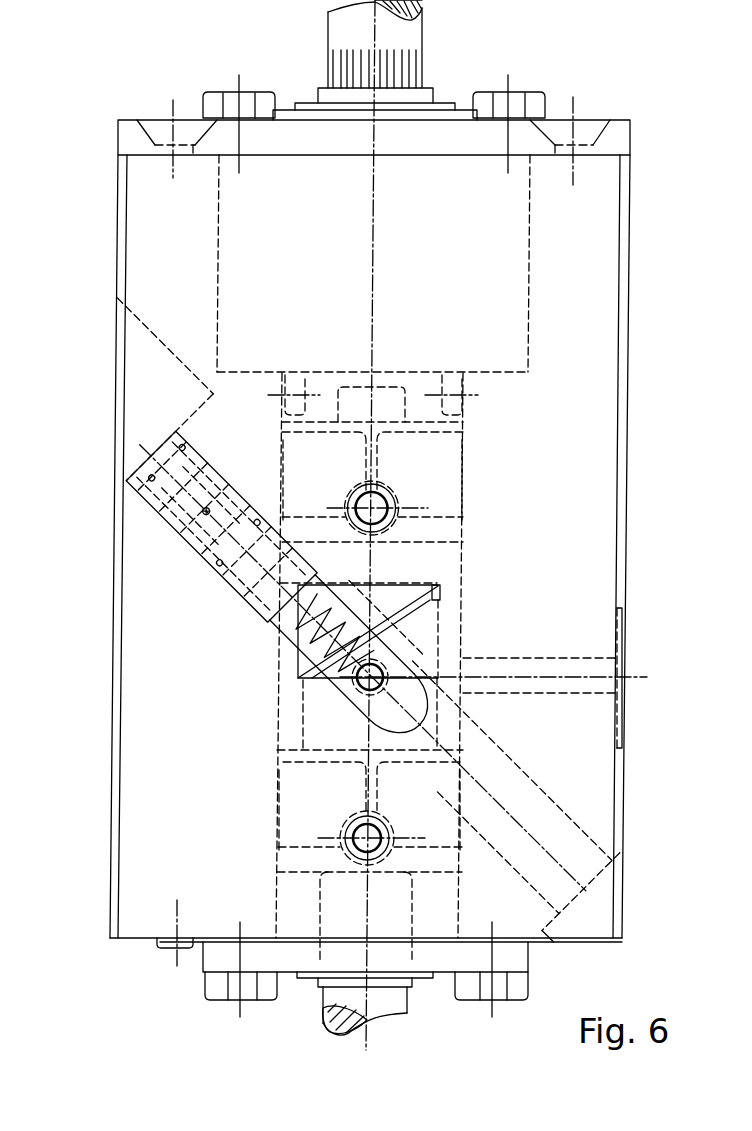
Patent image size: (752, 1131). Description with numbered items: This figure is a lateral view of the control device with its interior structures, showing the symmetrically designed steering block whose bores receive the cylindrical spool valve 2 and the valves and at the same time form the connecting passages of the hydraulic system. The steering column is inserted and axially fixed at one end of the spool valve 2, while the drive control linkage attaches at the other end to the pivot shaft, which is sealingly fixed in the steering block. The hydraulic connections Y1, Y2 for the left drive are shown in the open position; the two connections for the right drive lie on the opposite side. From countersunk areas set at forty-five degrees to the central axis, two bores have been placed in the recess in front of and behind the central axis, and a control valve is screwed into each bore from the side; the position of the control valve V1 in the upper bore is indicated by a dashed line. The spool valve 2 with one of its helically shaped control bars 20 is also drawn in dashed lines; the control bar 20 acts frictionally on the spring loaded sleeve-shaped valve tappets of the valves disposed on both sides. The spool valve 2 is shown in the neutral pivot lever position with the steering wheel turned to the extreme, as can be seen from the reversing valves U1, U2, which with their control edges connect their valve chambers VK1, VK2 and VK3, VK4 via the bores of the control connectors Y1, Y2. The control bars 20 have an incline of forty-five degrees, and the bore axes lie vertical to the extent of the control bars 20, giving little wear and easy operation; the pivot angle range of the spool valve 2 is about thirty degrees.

The spool valve 2 is at (303, 700).
The control bar 20 is at (403, 597).
The control valve V1 is at (183, 505).
The valve chamber VK1 is at (307, 450).
The valve chamber VK2 is at (435, 475).
The valve chamber VK3 is at (427, 817).
The valve chamber VK4 is at (303, 810).
The reversing valve U1 is at (432, 442).
The reversing valve U2 is at (307, 773).
The hydraulic connection Y1 is at (383, 523).
The hydraulic connection Y2 is at (342, 848).